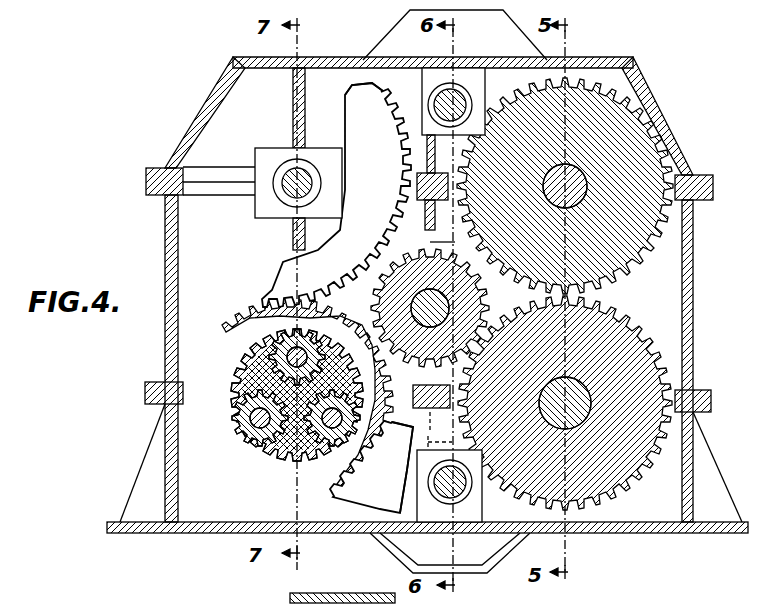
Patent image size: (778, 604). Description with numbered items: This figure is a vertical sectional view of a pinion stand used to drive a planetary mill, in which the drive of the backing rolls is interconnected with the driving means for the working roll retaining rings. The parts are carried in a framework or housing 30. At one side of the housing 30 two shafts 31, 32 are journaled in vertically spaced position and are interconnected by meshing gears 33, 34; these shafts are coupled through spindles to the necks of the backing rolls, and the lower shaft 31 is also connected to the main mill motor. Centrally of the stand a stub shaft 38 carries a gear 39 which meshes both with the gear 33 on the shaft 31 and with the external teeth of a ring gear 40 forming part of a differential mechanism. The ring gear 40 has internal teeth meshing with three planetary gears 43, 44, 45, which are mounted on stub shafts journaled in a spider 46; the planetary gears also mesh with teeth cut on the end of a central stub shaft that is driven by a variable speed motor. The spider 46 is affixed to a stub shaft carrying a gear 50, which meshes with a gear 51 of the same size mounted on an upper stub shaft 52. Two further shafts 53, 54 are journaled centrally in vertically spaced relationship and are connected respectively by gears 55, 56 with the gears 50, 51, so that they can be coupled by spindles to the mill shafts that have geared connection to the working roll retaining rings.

The housing 30 is at (690, 332).
The shaft 31 is at (566, 390).
The shaft 32 is at (570, 160).
The gear 33 is at (662, 362).
The gear 34 is at (653, 153).
The stub shaft 38 is at (430, 308).
The gear 39 is at (405, 284).
The ring gear 40 is at (230, 487).
The planetary gear 43 is at (297, 357).
The planetary gear 44 is at (260, 417).
The planetary gear 45 is at (332, 417).
The spider 46 is at (255, 365).
The gear 50 is at (345, 487).
The gear 51 is at (358, 95).
The upper stub shaft 52 is at (285, 165).
The shaft 53 is at (462, 488).
The shaft 54 is at (462, 92).
The gear 55 is at (382, 485).
The gear 56 is at (383, 90).